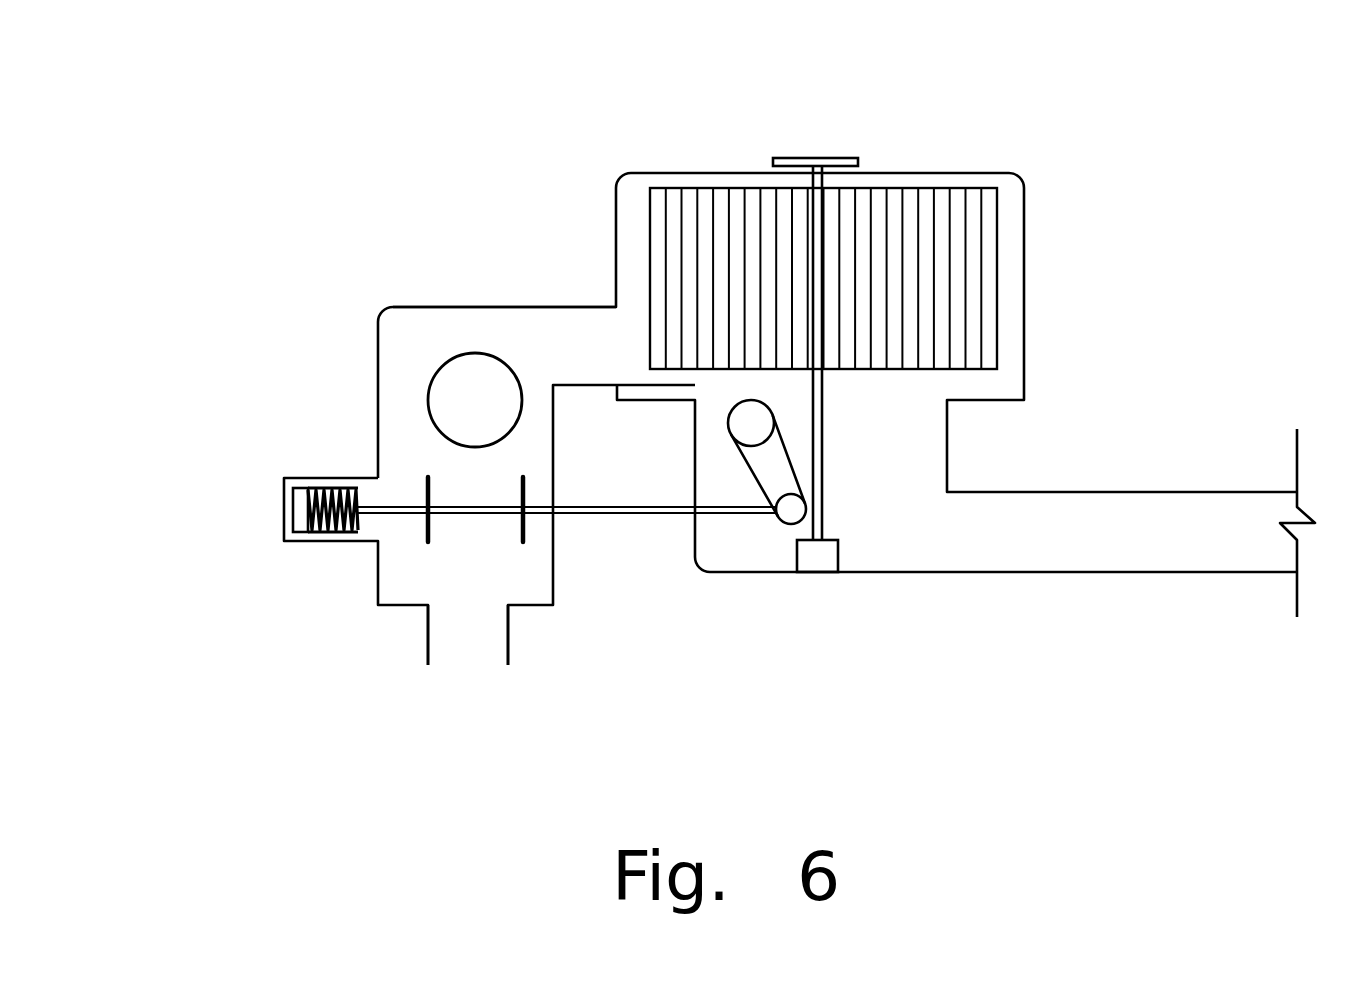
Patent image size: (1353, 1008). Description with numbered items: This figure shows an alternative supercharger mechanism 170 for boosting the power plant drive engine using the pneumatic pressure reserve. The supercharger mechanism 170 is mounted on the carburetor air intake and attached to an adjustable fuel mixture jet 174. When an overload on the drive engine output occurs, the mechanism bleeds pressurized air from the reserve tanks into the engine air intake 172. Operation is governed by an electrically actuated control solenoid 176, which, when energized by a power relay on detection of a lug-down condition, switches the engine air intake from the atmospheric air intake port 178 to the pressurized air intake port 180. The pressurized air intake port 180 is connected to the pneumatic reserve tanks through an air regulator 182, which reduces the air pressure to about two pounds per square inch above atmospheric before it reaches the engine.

The supercharger mechanism 170 is at (378, 366).
The engine air intake 172 is at (482, 635).
The adjustable fuel mixture jet 174 is at (775, 468).
The control solenoid 176 is at (330, 533).
The atmospheric air intake port 178 is at (487, 378).
The pressurized air intake port 180 is at (428, 307).
The air regulator 182 is at (1015, 208).